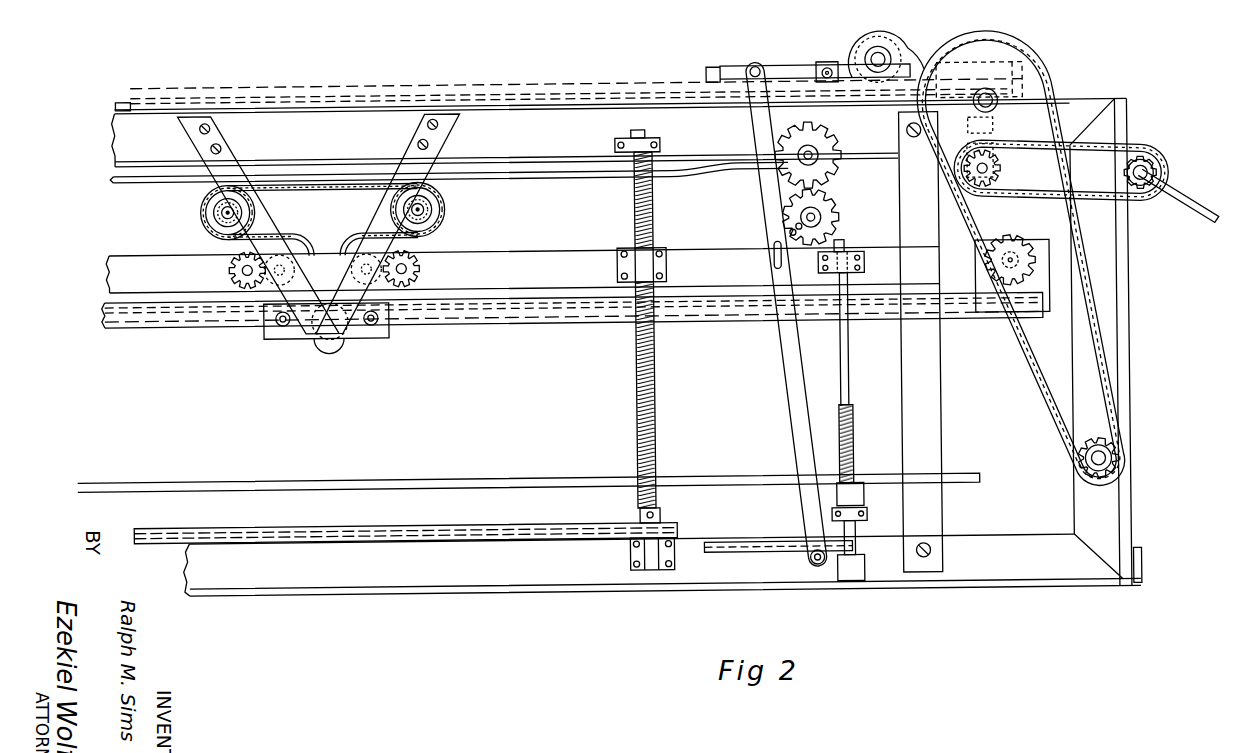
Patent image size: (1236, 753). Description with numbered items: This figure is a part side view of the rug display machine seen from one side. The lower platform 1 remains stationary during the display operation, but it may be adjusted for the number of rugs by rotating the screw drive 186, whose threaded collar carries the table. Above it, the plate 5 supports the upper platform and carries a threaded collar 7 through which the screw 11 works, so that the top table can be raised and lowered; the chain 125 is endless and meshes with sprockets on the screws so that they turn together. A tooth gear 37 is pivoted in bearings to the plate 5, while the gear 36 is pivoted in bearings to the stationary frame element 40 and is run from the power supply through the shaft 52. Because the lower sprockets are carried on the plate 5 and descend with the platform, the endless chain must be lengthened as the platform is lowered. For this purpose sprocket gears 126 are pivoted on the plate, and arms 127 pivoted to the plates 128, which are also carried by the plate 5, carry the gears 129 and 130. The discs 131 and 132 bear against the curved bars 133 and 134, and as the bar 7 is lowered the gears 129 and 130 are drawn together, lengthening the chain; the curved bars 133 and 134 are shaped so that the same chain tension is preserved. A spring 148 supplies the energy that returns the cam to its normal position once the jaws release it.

The lower platform 1 is at (723, 474).
The plate 5 is at (137, 247).
The threaded collar 7 is at (652, 253).
The screw 11 is at (655, 412).
The gear 36 is at (1018, 92).
The tooth gear 37 is at (1050, 262).
The stationary frame element 40 is at (1075, 150).
The shaft 52 is at (989, 101).
The chain 125 is at (395, 521).
The sprocket gear 126 is at (245, 259).
The arm 127 is at (212, 212).
The plate 128 is at (374, 337).
The gear 129 is at (434, 198).
The gear 130 is at (205, 192).
The disc 131 is at (439, 178).
The disc 132 is at (219, 183).
The curved bar 133 is at (425, 139).
The curved bar 134 is at (229, 131).
The spring 148 is at (330, 339).
The screw drive 186 is at (855, 448).